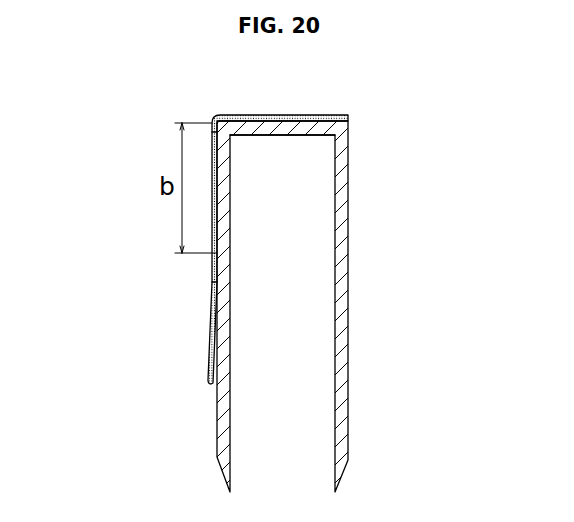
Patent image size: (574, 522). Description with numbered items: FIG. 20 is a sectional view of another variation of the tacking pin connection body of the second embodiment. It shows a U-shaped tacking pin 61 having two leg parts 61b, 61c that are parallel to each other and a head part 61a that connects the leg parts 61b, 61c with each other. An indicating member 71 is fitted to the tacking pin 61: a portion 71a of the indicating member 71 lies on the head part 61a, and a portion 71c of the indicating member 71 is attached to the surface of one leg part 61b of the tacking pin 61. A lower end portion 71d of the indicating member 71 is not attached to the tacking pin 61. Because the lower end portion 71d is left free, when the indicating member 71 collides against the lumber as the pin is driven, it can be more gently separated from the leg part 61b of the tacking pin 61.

The tacking pin 61 is at (487, 148).
The head part 61a is at (283, 136).
The leg part 61c is at (350, 253).
The leg part 61b is at (230, 372).
The indicating member 71 is at (68, 98).
The portion of the indicating member 71a is at (235, 117).
The portion of the indicating member 71c is at (217, 224).
The lower end portion of the indicating member 71d is at (208, 357).